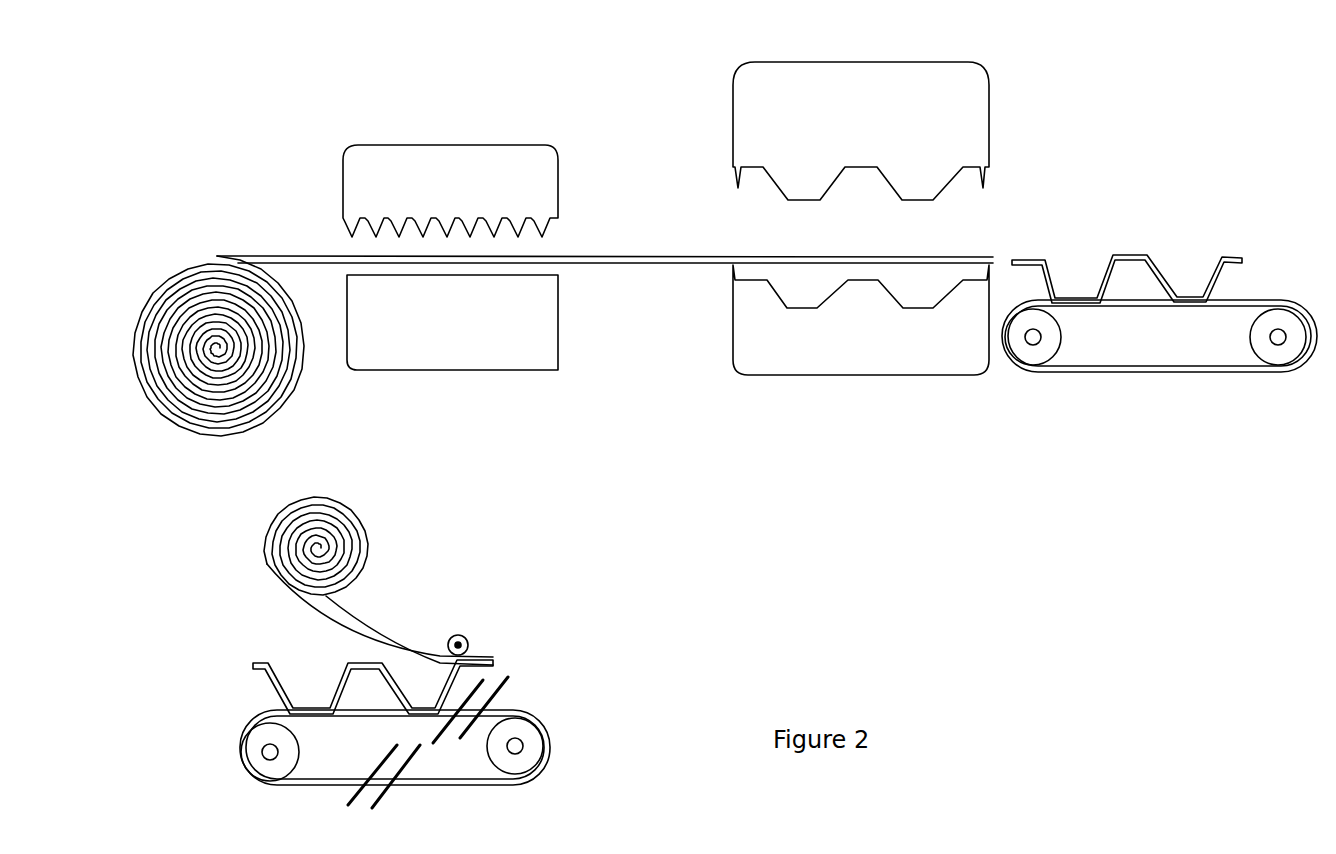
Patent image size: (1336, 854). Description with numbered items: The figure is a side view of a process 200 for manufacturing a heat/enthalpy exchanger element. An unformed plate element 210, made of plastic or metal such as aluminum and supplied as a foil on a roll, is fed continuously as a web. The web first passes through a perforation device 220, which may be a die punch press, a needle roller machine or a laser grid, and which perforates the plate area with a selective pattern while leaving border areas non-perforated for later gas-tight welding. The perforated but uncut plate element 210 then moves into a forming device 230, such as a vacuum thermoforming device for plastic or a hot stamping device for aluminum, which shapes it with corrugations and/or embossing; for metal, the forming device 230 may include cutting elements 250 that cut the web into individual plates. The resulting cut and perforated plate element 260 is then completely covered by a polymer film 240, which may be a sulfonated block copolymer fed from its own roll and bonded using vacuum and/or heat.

The corrugated sheet forming system 200 is at (98, 105).
The unformed plate element 210 is at (155, 410).
The perforation device 220 is at (553, 370).
The forming device 230 is at (888, 377).
The polymer film 240 is at (263, 563).
The cutting elements 250 is at (737, 185).
The cut and perforated plate element 260 is at (1222, 257).